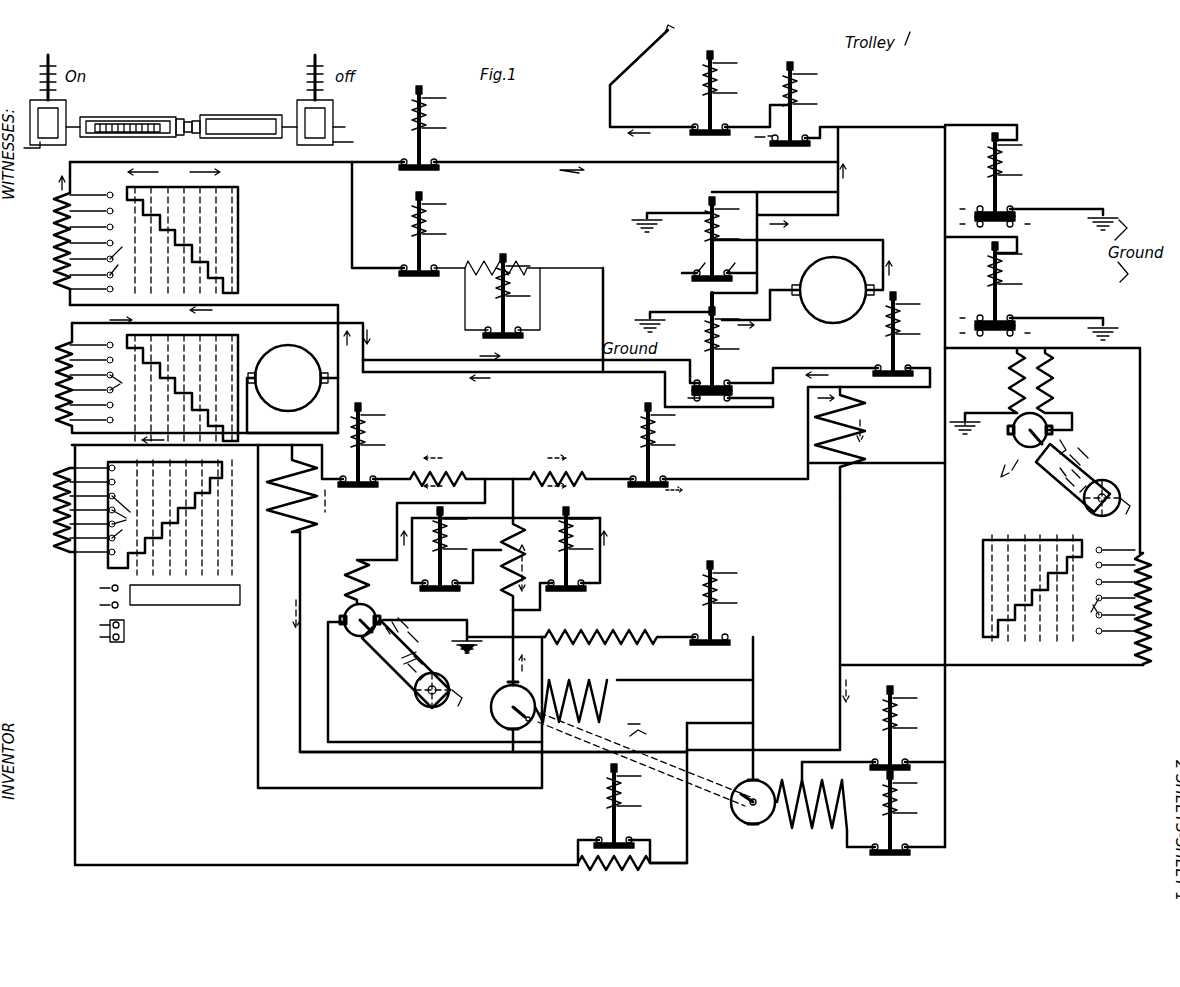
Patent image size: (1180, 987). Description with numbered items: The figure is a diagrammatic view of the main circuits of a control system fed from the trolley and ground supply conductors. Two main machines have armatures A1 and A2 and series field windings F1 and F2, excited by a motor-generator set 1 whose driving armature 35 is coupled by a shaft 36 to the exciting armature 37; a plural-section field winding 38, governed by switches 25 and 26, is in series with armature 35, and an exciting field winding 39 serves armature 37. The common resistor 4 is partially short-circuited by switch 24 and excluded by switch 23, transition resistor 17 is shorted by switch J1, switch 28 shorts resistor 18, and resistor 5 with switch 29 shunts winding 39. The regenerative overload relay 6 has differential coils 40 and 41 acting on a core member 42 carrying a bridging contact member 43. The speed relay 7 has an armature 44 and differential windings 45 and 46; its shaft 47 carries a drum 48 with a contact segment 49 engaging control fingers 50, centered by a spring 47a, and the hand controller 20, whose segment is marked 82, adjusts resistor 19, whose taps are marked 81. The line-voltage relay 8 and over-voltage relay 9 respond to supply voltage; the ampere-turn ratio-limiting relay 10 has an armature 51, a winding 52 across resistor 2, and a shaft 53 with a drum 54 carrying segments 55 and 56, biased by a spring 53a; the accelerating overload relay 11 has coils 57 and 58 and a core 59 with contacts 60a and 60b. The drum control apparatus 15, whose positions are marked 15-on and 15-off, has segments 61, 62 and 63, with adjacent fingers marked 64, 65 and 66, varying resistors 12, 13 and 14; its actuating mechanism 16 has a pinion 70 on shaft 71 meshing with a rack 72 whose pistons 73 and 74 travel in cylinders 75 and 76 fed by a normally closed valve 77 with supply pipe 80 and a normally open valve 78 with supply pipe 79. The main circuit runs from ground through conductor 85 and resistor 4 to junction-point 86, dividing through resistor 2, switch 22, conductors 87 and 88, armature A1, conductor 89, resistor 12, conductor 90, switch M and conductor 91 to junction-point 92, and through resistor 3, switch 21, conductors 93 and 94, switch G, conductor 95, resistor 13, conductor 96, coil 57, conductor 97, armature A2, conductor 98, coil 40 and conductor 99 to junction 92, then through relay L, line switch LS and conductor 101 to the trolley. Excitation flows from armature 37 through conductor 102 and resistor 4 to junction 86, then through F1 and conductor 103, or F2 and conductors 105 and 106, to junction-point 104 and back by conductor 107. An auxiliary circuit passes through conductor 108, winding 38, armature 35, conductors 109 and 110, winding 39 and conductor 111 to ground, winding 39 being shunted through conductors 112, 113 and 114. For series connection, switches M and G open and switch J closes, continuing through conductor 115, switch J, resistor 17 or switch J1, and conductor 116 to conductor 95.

The motor-generator set 1 is at (637, 721).
The stabilizing resistor 2 is at (451, 470).
The stabilizing resistor 3 is at (581, 470).
The common main-circuit resistor 4 is at (506, 564).
The auxiliary circuit resistor 5 is at (626, 636).
The regenerative overload relay 6 is at (719, 239).
The speed relay 7 is at (1110, 470).
The line-voltage relay 8 is at (1031, 288).
The over-voltage relay 9 is at (1031, 177).
The ampere-turn ratio-limiting relay 10 is at (435, 682).
The accelerating overload relay 11 is at (722, 347).
The variable resistor 12 is at (56, 248).
The variable resistor 13 is at (56, 383).
The auxiliary-circuit resistor 14 is at (56, 530).
The drum control apparatus 15 is at (179, 205).
The actuating mechanism 16 is at (185, 106).
The transition resistor 17 is at (494, 262).
The resistor 18 is at (616, 866).
The variable resistor 19 is at (1144, 556).
The speed-regulating controller 20 is at (1029, 581).
The switch 21 is at (657, 448).
The switch 22 is at (361, 445).
The switch 23 is at (565, 558).
The switch 24 is at (451, 557).
The switch 25 is at (873, 733).
The switch 26 is at (907, 813).
The switch 28 is at (610, 813).
The switch 29 is at (726, 603).
The driving armature 35 is at (758, 790).
The shaft 36 is at (668, 793).
The exciting armature 37 is at (491, 708).
The plural-section field winding 38 is at (818, 818).
The exciting field winding 39 is at (576, 690).
The actuating coil 40 is at (718, 236).
The actuating coil 41 is at (716, 208).
The core member 42 is at (706, 192).
The bridging contact member 43 is at (686, 280).
The relay armature 44 is at (1010, 436).
The exciting field winding 45 is at (1042, 450).
The exciting field winding 46 is at (1059, 389).
The shaft 47 is at (1030, 443).
The centering spring 47a is at (1047, 448).
The drum 48 is at (1092, 499).
The contact segment 49 is at (1094, 457).
The control fingers 50 is at (1060, 483).
The armature 51 is at (347, 616).
The exciting field winding 52 is at (400, 541).
The operating shaft 53 is at (370, 644).
The spring 53a is at (403, 617).
The drum 54 is at (429, 665).
The contact segment 55 is at (421, 645).
The contact segment 56 is at (423, 694).
The actuating coil 57 is at (708, 340).
The actuating coil 58 is at (704, 312).
The core member 59 is at (735, 278).
The bridging contact member 60a is at (730, 382).
The bridging contact member 60b is at (568, 389).
The contact segment 61 is at (182, 241).
The contact segment 62 is at (182, 389).
The contact segment 63 is at (179, 517).
The contact finger 64 is at (123, 255).
The contact finger 65 is at (123, 389).
The contact finger 66 is at (126, 518).
The pinion 70 is at (182, 114).
The controller-operating shaft 71 is at (176, 134).
The rack member 72 is at (127, 114).
The piston 73 is at (128, 116).
The piston 74 is at (205, 114).
The operating cylinder 75 is at (118, 120).
The operating cylinder 76 is at (236, 116).
The normally closed valve 77 is at (36, 100).
The normally open valve 78 is at (328, 100).
The supply pipe 79 is at (351, 145).
The supply pipe 80 is at (28, 158).
The contact finger 81 is at (1085, 604).
The controller cylinder 82 is at (1019, 575).
The conductor 85 is at (464, 653).
The junction-point 86 is at (503, 487).
The conductor 87 is at (209, 462).
The conductor 88 is at (246, 420).
The conductor 89 is at (312, 300).
The conductor 90 is at (330, 163).
The conductor 91 is at (636, 158).
The junction-point 92 is at (851, 171).
The conductor 93 is at (796, 423).
The conductor 94 is at (910, 394).
The conductor 95 is at (498, 395).
The conductor 96 is at (217, 341).
The conductor 97 is at (767, 317).
The conductor 98 is at (860, 244).
The conductor 99 is at (787, 242).
The conductor 101 is at (635, 105).
The conductor 102 is at (530, 647).
The conductor 103 is at (300, 578).
The junction-point 104 is at (493, 757).
The conductor 105 is at (842, 548).
The conductor 106 is at (975, 688).
The conductor 107 is at (531, 741).
The conductor 108 is at (945, 172).
The conductor 109 is at (753, 718).
The conductor 110 is at (685, 670).
The conductor 111 is at (645, 729).
The conductor 112 is at (720, 717).
The conductor 113 is at (326, 655).
The conductor 114 is at (384, 616).
The conductor 115 is at (363, 215).
The conductor 116 is at (603, 310).
The main armature A1 is at (309, 370).
The main armature A2 is at (833, 290).
The main field winding F1 is at (303, 488).
The main field winding F2 is at (844, 442).
The parallel-connecting switch G is at (896, 334).
The series-connecting switch J is at (422, 234).
The switch J1 is at (486, 299).
The low-current relay device L is at (835, 104).
The line switch LS is at (721, 93).
The parallel-connecting switch M is at (428, 128).
The controller on position 15-on is at (225, 598).
The controller off position 15-off is at (139, 633).